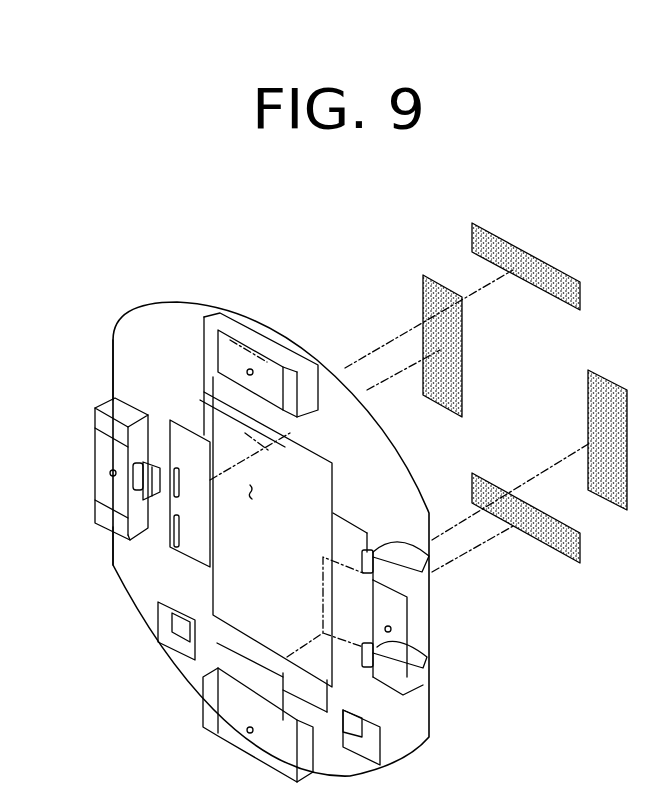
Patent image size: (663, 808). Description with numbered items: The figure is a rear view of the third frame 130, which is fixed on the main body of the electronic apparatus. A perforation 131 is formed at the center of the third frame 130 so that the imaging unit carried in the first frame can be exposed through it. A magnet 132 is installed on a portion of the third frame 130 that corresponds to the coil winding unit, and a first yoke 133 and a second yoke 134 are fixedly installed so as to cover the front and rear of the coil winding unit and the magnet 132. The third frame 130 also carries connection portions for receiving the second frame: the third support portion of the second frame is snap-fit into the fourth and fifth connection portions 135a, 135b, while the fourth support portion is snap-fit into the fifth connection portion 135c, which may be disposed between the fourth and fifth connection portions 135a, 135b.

The third frame 130 is at (166, 321).
The perforation 131 is at (167, 423).
The magnet 132 is at (193, 550).
The first yoke 133 is at (556, 550).
The second yoke 134 is at (217, 665).
The fourth connection portion 135a is at (433, 548).
The fifth connection portion 135b is at (428, 665).
The fifth connection portion 135c is at (137, 477).